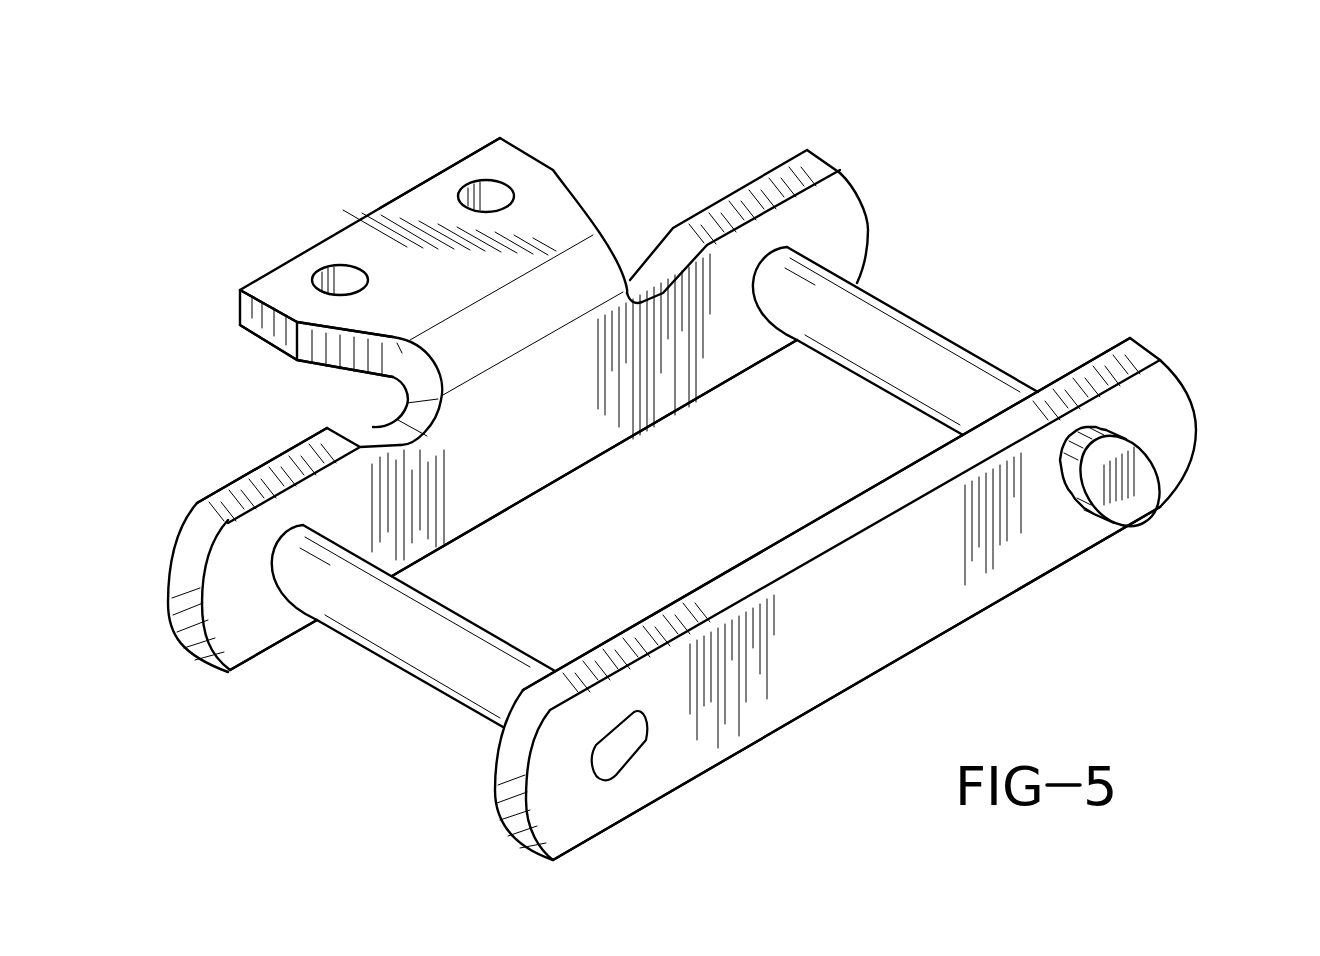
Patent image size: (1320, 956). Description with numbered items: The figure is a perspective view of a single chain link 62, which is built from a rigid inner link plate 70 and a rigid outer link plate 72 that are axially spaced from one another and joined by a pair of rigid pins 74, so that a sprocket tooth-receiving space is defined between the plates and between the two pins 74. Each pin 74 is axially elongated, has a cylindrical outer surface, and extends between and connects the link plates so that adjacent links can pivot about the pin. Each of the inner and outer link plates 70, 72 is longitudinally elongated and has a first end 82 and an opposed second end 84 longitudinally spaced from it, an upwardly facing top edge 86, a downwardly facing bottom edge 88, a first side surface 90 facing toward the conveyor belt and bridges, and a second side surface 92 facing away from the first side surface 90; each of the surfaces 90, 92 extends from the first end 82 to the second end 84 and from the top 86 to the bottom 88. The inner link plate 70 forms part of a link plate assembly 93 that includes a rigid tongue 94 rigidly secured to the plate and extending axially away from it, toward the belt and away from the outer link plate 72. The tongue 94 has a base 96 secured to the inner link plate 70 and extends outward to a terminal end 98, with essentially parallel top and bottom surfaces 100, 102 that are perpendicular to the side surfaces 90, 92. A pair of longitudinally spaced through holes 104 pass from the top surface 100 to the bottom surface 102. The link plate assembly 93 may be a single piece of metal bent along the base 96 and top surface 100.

The link 62 is at (1112, 176).
The inner link plate 70 is at (860, 238).
The outer link plate 72 is at (1185, 432).
The pin 74 is at (366, 622).
The first end 82 is at (188, 568).
The second end 84 is at (859, 208).
The top edge 86 is at (322, 446).
The bottom edge 88 is at (478, 532).
The first side surface 90 is at (250, 475).
The second side surface 92 is at (502, 482).
The link plate assembly 93 is at (378, 194).
The tongue 94 is at (458, 163).
The base 96 is at (514, 323).
The terminal end 98 is at (418, 186).
The top surface 100 is at (288, 280).
The bottom surface 102 is at (278, 350).
The holes 104 is at (497, 188).